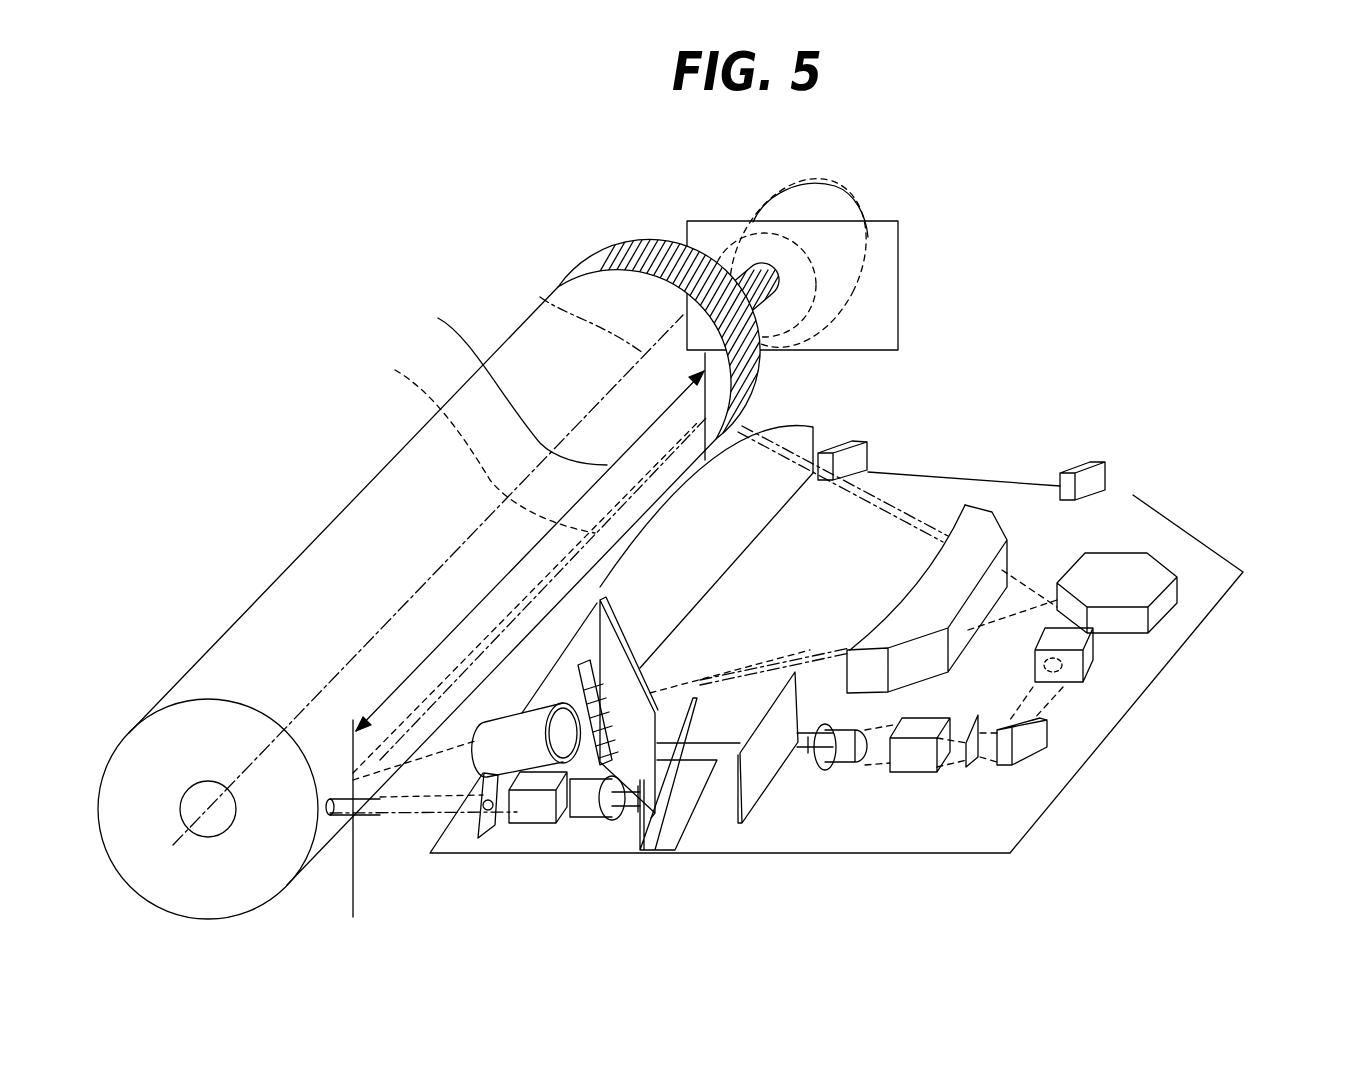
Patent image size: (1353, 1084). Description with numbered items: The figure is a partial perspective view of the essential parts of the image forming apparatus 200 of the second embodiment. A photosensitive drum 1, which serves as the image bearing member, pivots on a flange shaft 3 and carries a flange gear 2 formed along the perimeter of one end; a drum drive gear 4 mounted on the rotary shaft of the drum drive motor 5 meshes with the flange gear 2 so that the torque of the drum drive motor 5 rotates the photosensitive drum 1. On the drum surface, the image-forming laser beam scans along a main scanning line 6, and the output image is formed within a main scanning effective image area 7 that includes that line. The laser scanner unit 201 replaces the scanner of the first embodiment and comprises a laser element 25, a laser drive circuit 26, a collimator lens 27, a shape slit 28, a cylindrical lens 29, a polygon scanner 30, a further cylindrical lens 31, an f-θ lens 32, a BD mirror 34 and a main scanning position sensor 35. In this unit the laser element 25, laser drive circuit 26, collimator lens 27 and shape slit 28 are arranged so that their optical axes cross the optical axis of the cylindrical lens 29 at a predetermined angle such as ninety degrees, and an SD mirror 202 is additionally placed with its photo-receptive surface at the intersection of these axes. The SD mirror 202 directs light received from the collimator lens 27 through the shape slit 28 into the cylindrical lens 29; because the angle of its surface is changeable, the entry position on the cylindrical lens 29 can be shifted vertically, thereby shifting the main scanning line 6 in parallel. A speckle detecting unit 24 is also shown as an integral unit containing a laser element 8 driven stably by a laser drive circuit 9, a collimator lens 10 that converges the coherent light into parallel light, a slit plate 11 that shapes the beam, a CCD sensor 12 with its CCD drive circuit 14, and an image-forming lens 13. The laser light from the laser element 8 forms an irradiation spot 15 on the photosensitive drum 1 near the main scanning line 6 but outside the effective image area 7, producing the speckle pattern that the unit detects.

The photosensitive drum 1 is at (530, 345).
The flange gear 2 is at (610, 257).
The flange shaft 3 is at (540, 297).
The drum drive gear 4 is at (757, 270).
The drum drive motor 5 is at (885, 250).
The main scanning line 6 is at (478, 443).
The main scanning effective image area 7 is at (511, 379).
The laser element 8 is at (596, 815).
The laser drive circuit 9 is at (682, 773).
The collimator lens 10 is at (540, 814).
The slit plate 11 is at (489, 828).
The CCD sensor 12 is at (583, 660).
The image-forming lens 13 is at (513, 717).
The CCD drive circuit 14 is at (597, 612).
The irradiation spot 15 is at (318, 812).
The speckle detecting unit 24 is at (462, 842).
The laser element 25 is at (850, 757).
The laser drive circuit 26 is at (763, 773).
The collimator lens 27 is at (922, 757).
The shape slit 28 is at (973, 763).
The cylindrical lens 29 is at (1093, 653).
The polygon scanner 30 is at (1180, 600).
The cylindrical lens 31 is at (990, 520).
The f-θ lens 32 is at (797, 435).
The BD mirror 34 is at (865, 452).
The main scanning position sensor 35 is at (1105, 465).
The image forming apparatus 200 is at (1188, 258).
The laser scanner unit 201 is at (955, 470).
The SD mirror 202 is at (1047, 744).